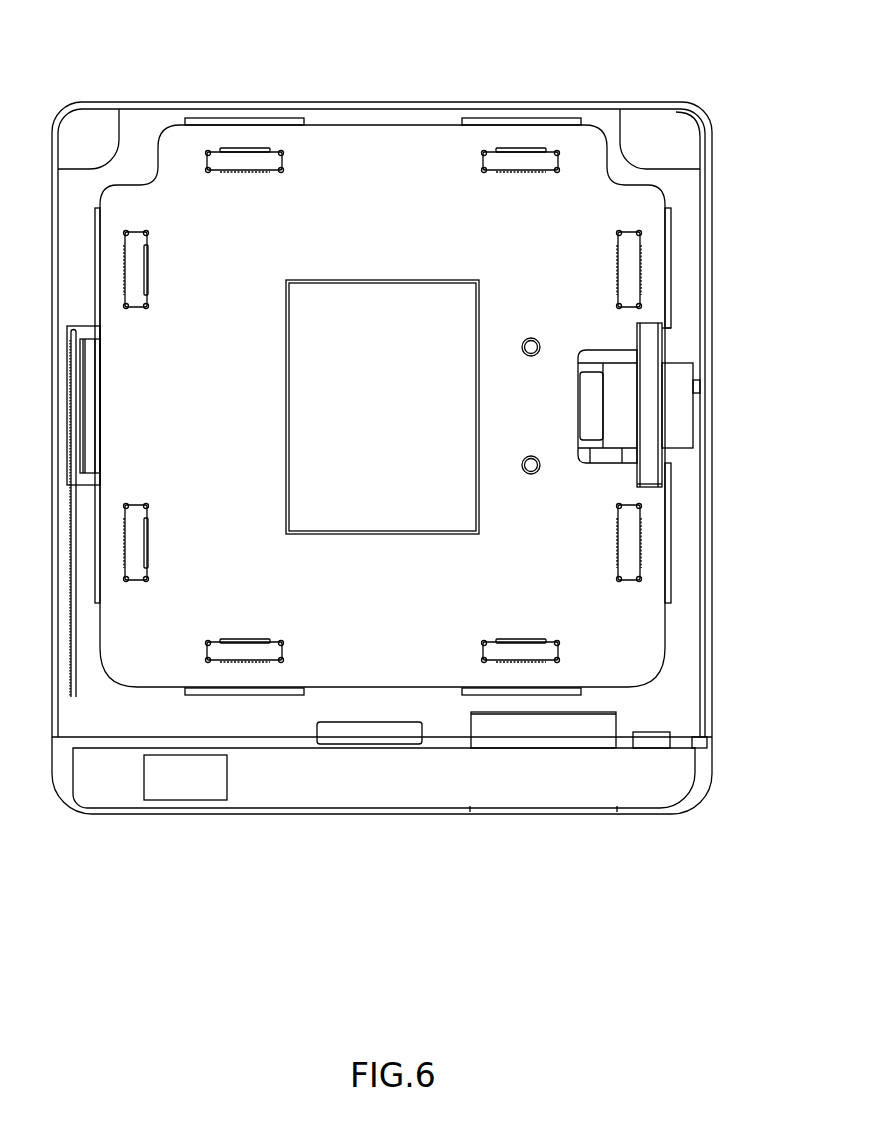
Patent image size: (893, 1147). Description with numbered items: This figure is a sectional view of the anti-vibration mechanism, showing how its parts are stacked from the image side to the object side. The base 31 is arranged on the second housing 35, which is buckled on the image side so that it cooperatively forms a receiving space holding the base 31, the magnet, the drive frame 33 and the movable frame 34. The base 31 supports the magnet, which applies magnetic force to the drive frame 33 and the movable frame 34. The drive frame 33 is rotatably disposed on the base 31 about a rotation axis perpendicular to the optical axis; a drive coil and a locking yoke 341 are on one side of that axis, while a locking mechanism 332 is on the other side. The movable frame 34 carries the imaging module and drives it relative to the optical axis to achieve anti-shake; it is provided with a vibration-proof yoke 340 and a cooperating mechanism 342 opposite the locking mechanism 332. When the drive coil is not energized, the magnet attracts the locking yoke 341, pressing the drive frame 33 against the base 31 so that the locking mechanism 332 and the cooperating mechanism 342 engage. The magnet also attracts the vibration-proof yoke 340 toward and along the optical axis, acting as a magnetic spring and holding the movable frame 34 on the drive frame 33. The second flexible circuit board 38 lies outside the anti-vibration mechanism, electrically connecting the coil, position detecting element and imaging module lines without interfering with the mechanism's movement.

The base 31 is at (90, 120).
The drive frame 33 is at (675, 423).
The movable frame 34 is at (588, 157).
The second housing 35 is at (203, 107).
The second flexible circuit board 38 is at (380, 787).
The locking mechanism 332 is at (535, 346).
The vibration-proof yoke 340 is at (525, 158).
The locking yoke 341 is at (590, 390).
The cooperating mechanism 342 is at (531, 338).